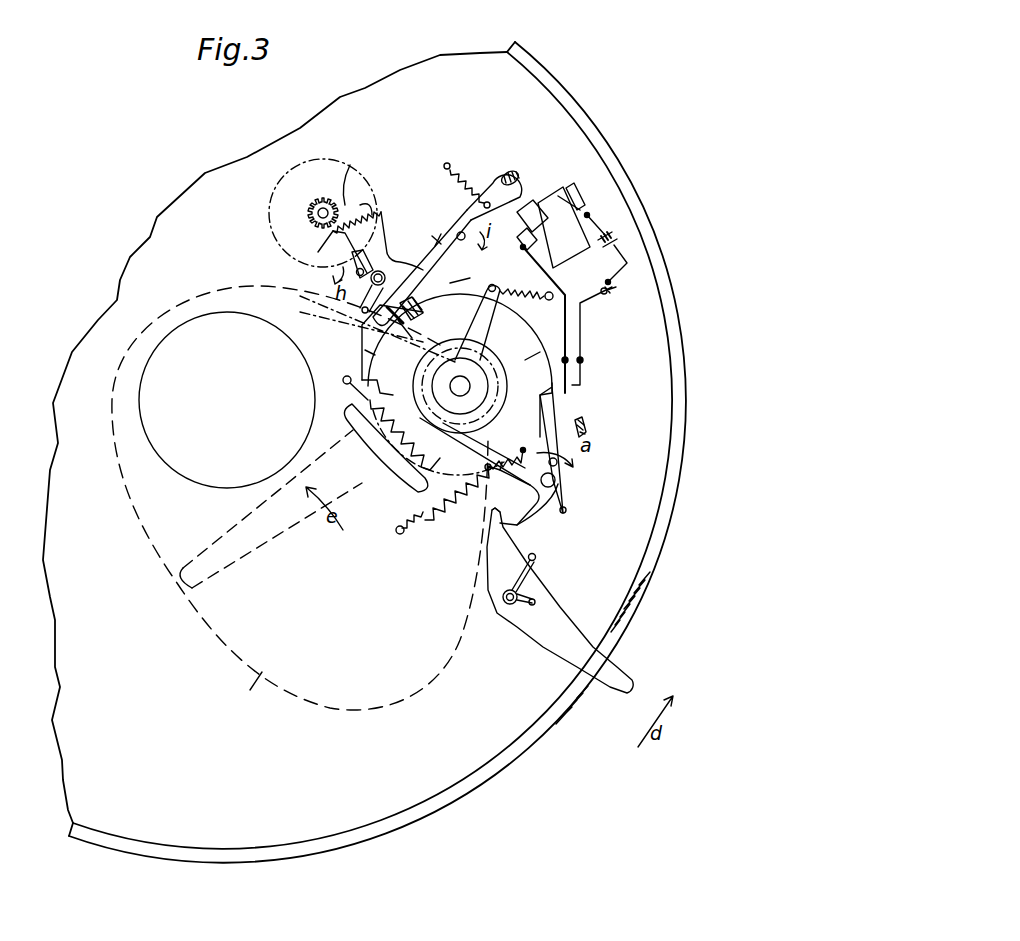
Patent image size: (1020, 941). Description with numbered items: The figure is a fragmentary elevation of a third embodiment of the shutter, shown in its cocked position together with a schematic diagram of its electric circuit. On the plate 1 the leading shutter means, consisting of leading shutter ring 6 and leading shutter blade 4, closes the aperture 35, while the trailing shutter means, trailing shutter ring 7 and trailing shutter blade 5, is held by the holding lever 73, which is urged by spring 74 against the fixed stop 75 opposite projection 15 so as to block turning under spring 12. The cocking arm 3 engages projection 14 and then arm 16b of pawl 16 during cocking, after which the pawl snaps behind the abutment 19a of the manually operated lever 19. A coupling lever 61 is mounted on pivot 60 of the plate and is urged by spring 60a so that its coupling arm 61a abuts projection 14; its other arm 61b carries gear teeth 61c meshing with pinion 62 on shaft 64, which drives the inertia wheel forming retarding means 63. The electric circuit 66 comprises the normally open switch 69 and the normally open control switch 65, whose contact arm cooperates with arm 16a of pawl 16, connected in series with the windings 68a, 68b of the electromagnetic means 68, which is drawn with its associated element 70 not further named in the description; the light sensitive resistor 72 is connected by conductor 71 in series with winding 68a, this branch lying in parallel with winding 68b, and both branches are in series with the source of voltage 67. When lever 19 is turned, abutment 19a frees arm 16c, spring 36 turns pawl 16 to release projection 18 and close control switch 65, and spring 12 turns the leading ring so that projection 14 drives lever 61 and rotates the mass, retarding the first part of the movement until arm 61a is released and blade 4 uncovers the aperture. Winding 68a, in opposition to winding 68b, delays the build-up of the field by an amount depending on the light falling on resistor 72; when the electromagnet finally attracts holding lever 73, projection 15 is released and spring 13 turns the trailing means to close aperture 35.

The plate 1 is at (408, 72).
The cocking arm 3 is at (483, 359).
The leading shutter blade 4 is at (152, 540).
The trailing shutter blade 5 is at (268, 668).
The leading shutter ring 6 is at (426, 318).
The trailing shutter ring 7 is at (522, 340).
The spring 12 is at (430, 525).
The spring 13 is at (360, 400).
The projection 14 is at (398, 318).
The projection 15 is at (366, 350).
The pawl 16 is at (560, 478).
The arm of pawl 16a is at (558, 410).
The arm of pawl 16b is at (385, 469).
The arm of pawl 16c is at (517, 524).
The projection 18 is at (530, 358).
The manually operated lever 19 is at (540, 643).
The abutment 19a is at (490, 520).
The aperture 35 is at (216, 488).
The spring 36 is at (566, 510).
The pivot 60 is at (385, 272).
The spring 60a is at (365, 258).
The coupling lever 61 is at (427, 250).
The coupling arm 61a is at (469, 271).
The arm of coupling lever 61b is at (318, 257).
The gear teeth 61c is at (369, 196).
The pinion 62 is at (348, 170).
The retarding means 63 is at (268, 222).
The shaft 64 is at (322, 200).
The control switch 65 is at (574, 372).
The electric circuit 66 is at (598, 263).
The source of voltage 67 is at (608, 244).
The electromagnetic means 68 is at (535, 205).
The winding 68a is at (484, 206).
The winding 68b is at (523, 250).
The switch 69 is at (610, 293).
The switch body 70 is at (564, 227).
The conductor 71 is at (556, 186).
The light sensitive resistor 72 is at (576, 200).
The holding means 73 is at (442, 228).
The spring 74 is at (464, 173).
The fixed stop 75 is at (511, 172).